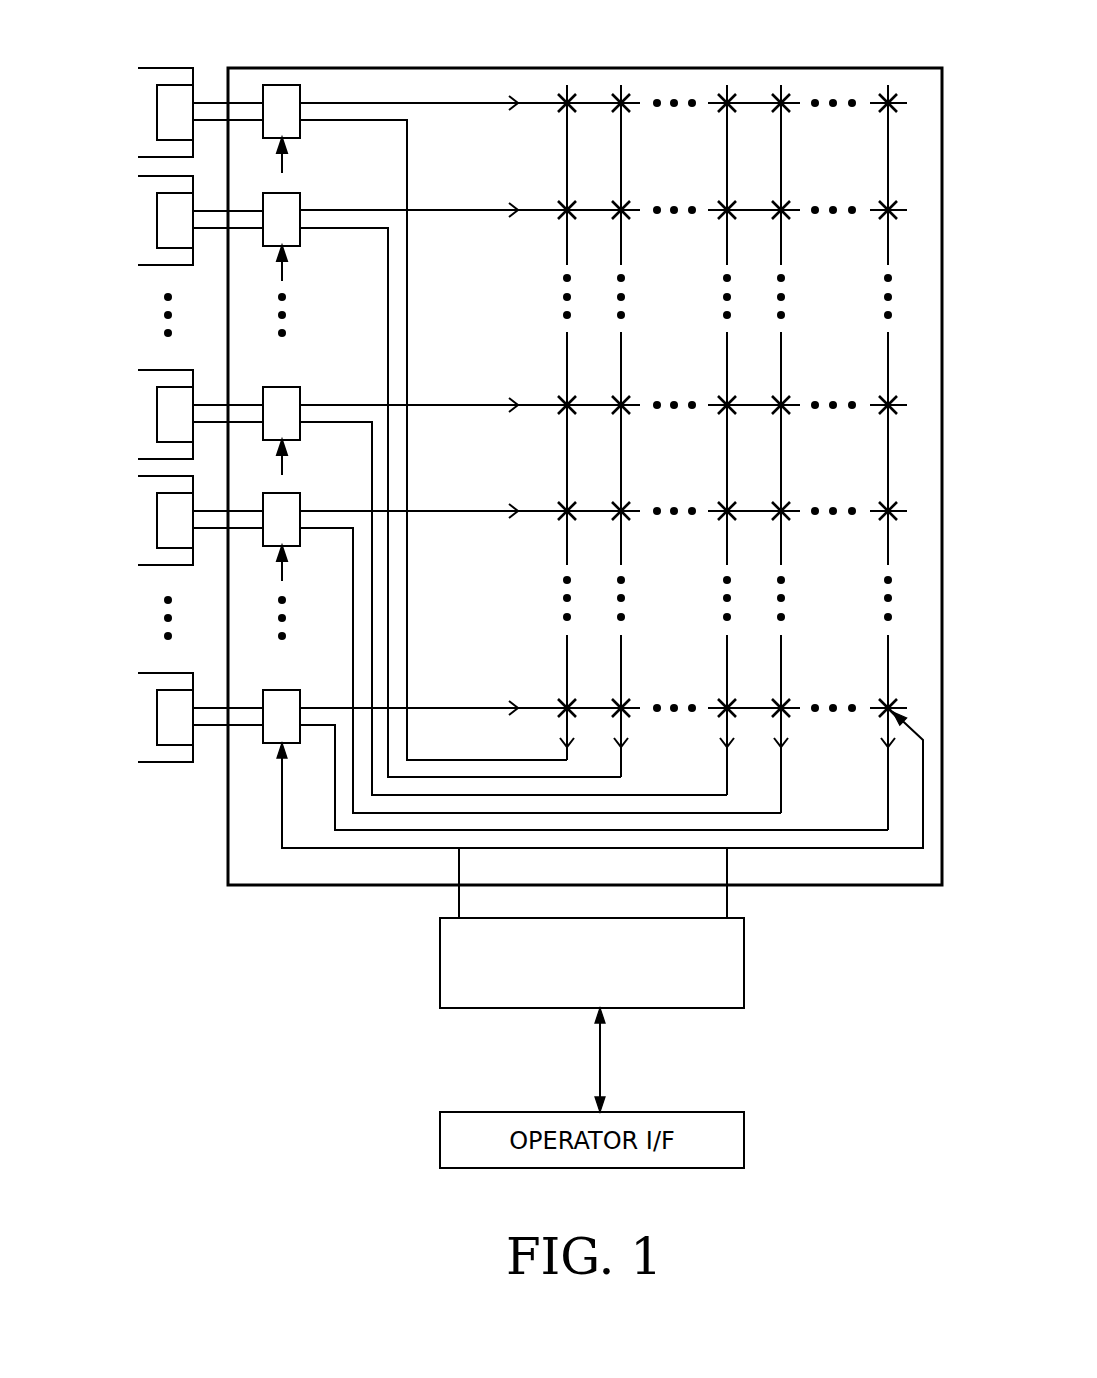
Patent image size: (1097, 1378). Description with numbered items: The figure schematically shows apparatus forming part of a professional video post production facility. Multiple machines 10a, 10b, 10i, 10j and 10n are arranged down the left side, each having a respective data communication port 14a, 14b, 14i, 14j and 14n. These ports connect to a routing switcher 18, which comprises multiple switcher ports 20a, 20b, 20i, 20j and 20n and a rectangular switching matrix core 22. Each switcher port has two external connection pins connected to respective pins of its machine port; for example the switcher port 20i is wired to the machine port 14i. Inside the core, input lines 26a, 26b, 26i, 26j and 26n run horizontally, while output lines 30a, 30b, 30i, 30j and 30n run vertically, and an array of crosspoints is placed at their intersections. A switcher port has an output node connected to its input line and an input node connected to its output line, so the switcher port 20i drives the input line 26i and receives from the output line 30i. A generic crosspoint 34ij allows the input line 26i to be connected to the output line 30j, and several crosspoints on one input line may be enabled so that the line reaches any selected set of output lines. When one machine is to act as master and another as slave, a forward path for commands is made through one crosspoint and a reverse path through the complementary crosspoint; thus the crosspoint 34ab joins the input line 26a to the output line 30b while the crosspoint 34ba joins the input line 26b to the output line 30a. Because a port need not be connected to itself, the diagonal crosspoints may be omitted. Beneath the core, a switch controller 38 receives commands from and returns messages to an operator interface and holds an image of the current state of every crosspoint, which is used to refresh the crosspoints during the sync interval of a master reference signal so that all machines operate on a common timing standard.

The machine 10a is at (148, 112).
The machine 10b is at (148, 220).
The machine 10i is at (150, 414).
The machine 10j is at (150, 520).
The machine 10n is at (146, 717).
The data communication port 14a is at (177, 100).
The data communication port 14b is at (175, 225).
The data communication port 14i is at (177, 400).
The data communication port 14j is at (175, 522).
The data communication port 14n is at (177, 705).
The switcher port 20a is at (283, 100).
The switcher port 20b is at (292, 222).
The switcher port 20i is at (283, 405).
The switcher port 20j is at (292, 520).
The switcher port 20n is at (283, 705).
The rectangular switching matrix core 22 is at (912, 72).
The input line 26a is at (433, 103).
The input line 26b is at (433, 210).
The input line 26i is at (450, 405).
The input line 26j is at (445, 511).
The input line 26n is at (440, 708).
The output line 30a is at (567, 136).
The output line 30b is at (621, 168).
The output line 30i is at (727, 245).
The output line 30j is at (781, 215).
The output line 30n is at (888, 345).
The crosspoint 34ab is at (623, 100).
The crosspoint 34ba is at (565, 213).
The crosspoint 34ij is at (785, 412).
The switch controller 38 is at (745, 983).
The routing switcher 18 is at (285, 915).